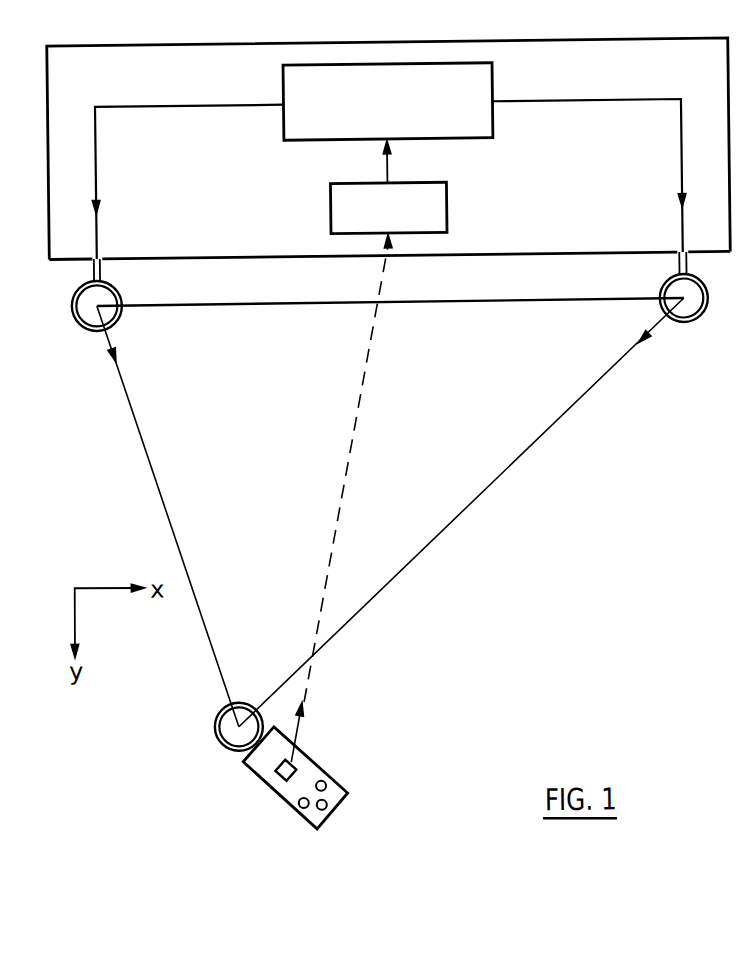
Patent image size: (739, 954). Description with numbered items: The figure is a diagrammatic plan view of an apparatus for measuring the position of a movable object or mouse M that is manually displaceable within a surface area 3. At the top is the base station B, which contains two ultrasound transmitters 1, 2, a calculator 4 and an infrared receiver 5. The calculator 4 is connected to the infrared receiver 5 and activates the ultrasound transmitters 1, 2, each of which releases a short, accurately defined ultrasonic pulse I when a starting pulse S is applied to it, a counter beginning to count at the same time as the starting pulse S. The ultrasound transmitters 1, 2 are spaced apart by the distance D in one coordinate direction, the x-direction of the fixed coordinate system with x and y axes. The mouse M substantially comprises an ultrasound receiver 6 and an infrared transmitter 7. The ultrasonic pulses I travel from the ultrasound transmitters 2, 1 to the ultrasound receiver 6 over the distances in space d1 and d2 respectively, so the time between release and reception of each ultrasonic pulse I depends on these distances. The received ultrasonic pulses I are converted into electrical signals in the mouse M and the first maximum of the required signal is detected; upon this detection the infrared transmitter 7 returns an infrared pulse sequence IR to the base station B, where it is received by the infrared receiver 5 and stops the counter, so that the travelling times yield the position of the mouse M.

The ultrasound transmitter 1 is at (78, 322).
The ultrasound transmitter 2 is at (698, 326).
The surface area 3 is at (298, 415).
The calculator 4 is at (497, 91).
The infrared receiver 5 is at (449, 199).
The ultrasound receiver 6 is at (209, 725).
The infrared transmitter 7 is at (263, 781).
The base station B is at (224, 43).
The starting pulse S is at (204, 105).
The distance D is at (390, 287).
The ultrasonic pulse I is at (113, 325).
The infrared pulse sequence IR is at (294, 726).
The mouse M is at (308, 754).
The distance in space d1 is at (461, 512).
The distance in space d2 is at (168, 516).